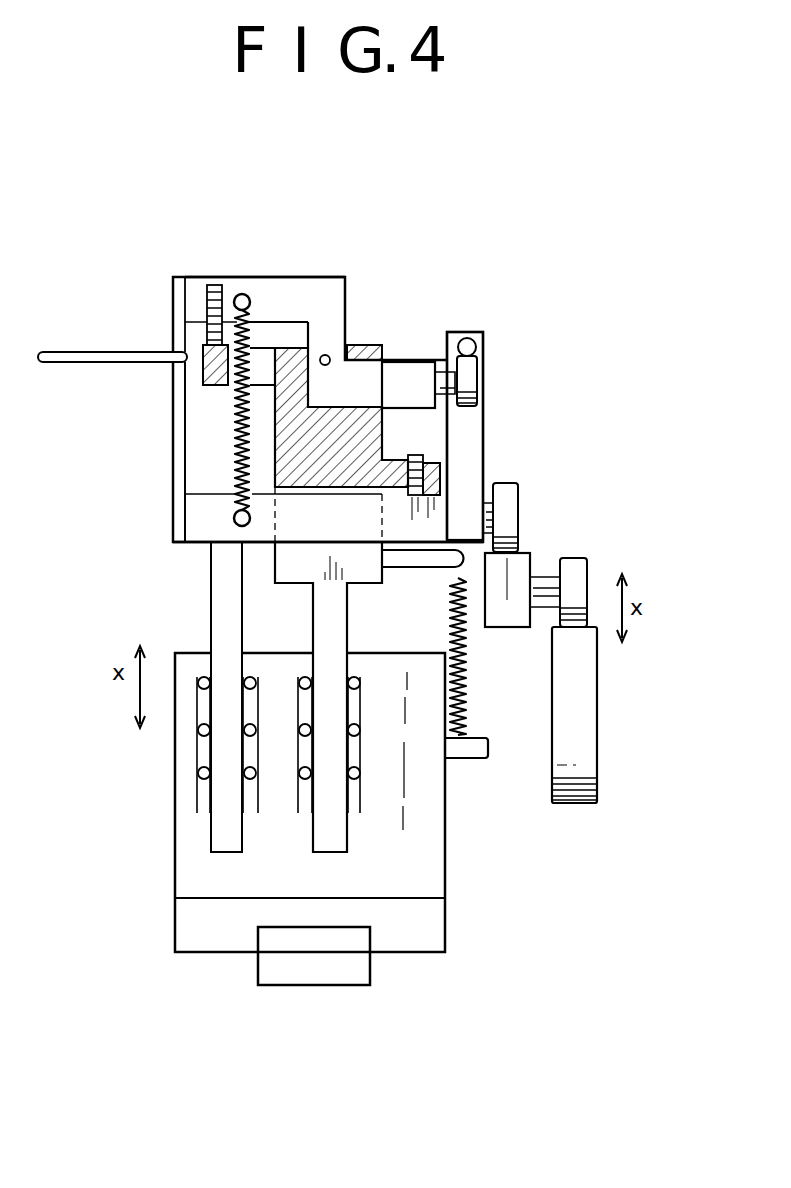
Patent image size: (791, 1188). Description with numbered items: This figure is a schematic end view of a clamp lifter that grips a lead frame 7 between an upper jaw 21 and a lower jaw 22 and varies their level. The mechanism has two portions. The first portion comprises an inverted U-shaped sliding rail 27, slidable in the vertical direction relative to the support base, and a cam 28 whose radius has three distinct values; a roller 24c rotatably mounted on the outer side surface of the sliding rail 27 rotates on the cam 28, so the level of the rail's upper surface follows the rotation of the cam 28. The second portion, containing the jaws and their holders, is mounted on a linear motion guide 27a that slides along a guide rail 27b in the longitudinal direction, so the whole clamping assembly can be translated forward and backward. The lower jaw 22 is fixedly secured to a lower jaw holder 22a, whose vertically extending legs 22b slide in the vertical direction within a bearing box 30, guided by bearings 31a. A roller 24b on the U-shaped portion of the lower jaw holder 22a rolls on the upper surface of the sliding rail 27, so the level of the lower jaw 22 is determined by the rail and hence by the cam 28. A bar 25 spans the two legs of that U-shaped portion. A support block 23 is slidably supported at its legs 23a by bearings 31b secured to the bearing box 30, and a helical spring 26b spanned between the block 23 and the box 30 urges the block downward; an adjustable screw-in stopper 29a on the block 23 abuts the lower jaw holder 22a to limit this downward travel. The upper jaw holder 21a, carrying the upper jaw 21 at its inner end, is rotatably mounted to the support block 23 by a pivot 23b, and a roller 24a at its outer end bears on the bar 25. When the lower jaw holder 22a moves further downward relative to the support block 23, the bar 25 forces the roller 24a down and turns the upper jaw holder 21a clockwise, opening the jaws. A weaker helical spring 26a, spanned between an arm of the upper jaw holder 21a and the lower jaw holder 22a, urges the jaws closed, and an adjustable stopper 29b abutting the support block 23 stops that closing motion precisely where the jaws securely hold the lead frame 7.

The lead frame 7 is at (87, 363).
The upper jaw 21 is at (172, 306).
The upper jaw holder 21a is at (196, 276).
The lower jaw 22 is at (174, 482).
The lower jaw holder 22a is at (200, 546).
The legs of the lower jaw holder 22b is at (226, 610).
The support block 23 is at (374, 345).
The legs of the support block 23a is at (346, 616).
The pivot 23b is at (326, 354).
The roller 24a is at (474, 382).
The roller 24b is at (520, 498).
The roller 24c is at (588, 576).
The bar 25 is at (477, 346).
The helical spring 26a is at (256, 338).
The helical spring 26b is at (468, 702).
The sliding rail 27 is at (523, 566).
The linear motion guide 27a is at (446, 932).
The guide rail 27b is at (366, 964).
The cam 28 is at (598, 676).
The adjustable stopper 29a is at (428, 456).
The adjustable stopper 29b is at (212, 284).
The bearing box 30 is at (446, 858).
The bearings 31a is at (200, 732).
The bearings 31b is at (300, 777).